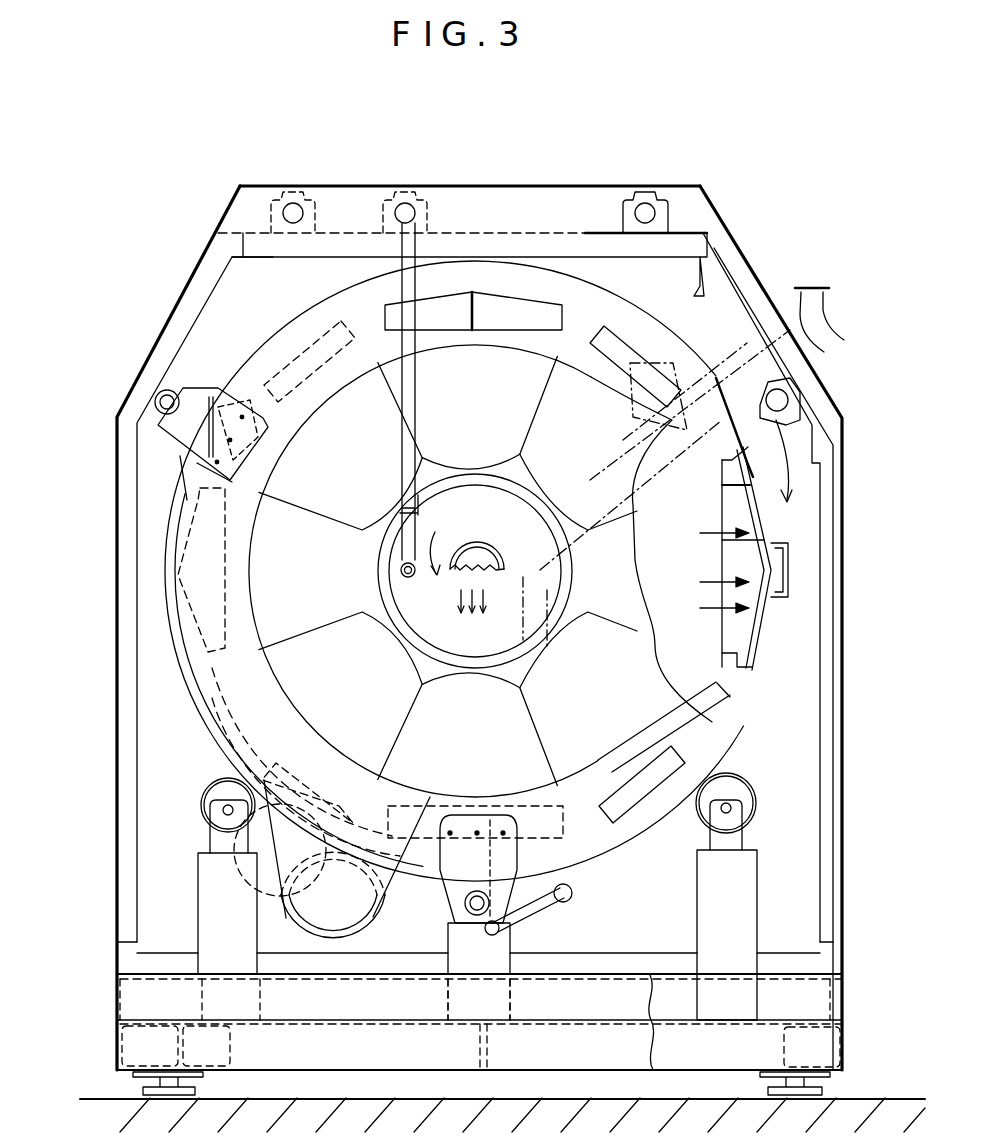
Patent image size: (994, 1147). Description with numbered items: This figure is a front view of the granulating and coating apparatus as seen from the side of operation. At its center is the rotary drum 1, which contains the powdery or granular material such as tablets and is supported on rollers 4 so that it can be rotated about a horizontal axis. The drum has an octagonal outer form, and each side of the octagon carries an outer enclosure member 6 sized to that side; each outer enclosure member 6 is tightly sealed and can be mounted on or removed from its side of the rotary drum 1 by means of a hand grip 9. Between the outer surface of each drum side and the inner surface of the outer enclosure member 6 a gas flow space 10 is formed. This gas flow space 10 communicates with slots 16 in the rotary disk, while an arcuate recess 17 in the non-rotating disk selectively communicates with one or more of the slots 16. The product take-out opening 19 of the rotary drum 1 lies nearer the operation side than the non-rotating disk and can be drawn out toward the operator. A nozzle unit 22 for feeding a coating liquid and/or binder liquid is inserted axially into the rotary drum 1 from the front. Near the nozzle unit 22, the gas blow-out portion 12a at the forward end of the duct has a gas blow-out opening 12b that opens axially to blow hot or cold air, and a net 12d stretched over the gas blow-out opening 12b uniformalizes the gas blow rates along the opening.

The rotary drum 1 is at (732, 624).
The rollers 4 is at (200, 801).
The outer enclosure member 6 is at (834, 610).
The hand grip 9 is at (788, 567).
The gas flow space 10 is at (750, 538).
The gas blow-out portion 12a is at (458, 546).
The gas blow-out opening 12b is at (480, 556).
The net 12d is at (462, 568).
The slots 16 is at (212, 698).
The arcuate recess 17 is at (212, 668).
The product take-out opening 19 is at (377, 605).
The nozzle unit 22 is at (400, 571).